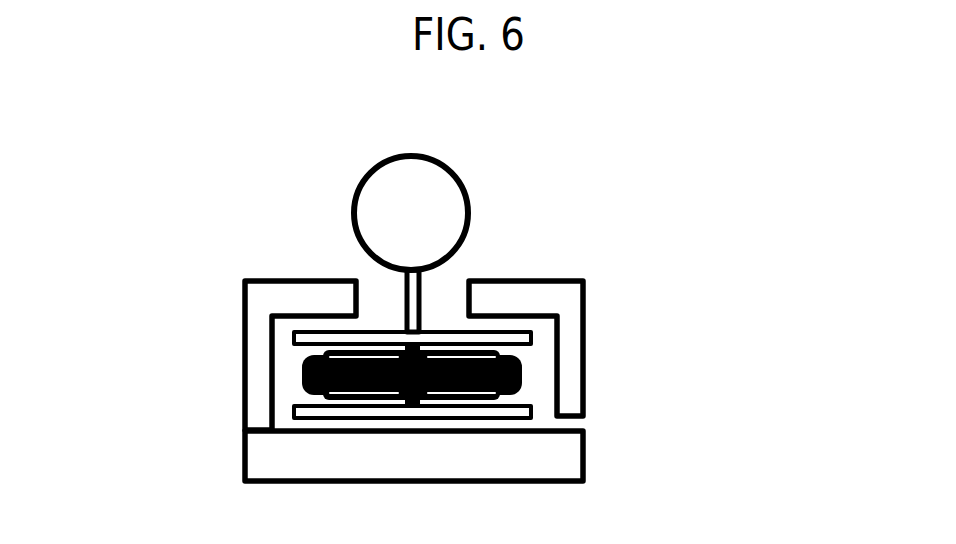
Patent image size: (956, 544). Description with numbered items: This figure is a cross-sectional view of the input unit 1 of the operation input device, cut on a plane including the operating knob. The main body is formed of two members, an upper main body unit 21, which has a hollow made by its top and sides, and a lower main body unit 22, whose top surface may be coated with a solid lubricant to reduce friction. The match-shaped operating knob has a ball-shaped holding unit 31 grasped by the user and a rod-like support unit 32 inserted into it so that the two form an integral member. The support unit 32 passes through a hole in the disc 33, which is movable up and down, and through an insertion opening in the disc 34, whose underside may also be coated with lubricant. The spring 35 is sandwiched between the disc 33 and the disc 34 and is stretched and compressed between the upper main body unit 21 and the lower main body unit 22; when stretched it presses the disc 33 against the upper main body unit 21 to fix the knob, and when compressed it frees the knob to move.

The input unit 1 is at (727, 151).
The upper main body unit 21 is at (584, 307).
The lower main body unit 22 is at (584, 442).
The holding unit 31 is at (450, 163).
The support unit 32 is at (403, 300).
The disc 33 is at (293, 337).
The disc 34 is at (292, 408).
The spring 35 is at (302, 372).